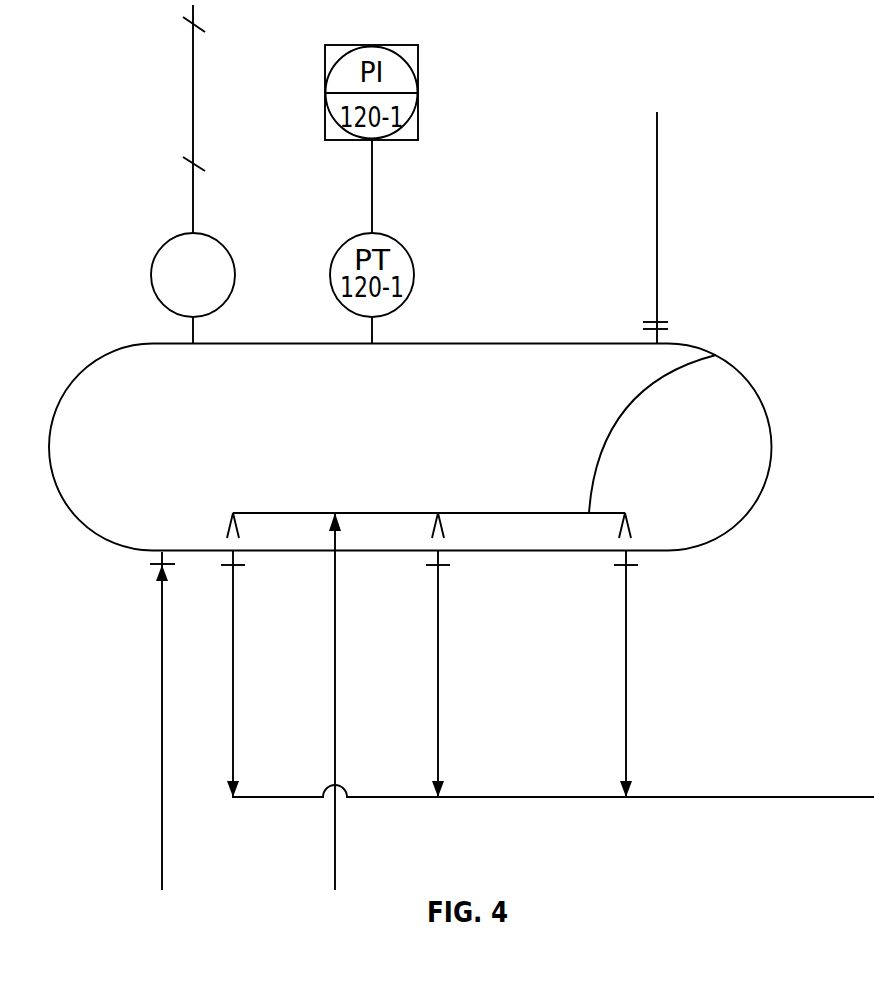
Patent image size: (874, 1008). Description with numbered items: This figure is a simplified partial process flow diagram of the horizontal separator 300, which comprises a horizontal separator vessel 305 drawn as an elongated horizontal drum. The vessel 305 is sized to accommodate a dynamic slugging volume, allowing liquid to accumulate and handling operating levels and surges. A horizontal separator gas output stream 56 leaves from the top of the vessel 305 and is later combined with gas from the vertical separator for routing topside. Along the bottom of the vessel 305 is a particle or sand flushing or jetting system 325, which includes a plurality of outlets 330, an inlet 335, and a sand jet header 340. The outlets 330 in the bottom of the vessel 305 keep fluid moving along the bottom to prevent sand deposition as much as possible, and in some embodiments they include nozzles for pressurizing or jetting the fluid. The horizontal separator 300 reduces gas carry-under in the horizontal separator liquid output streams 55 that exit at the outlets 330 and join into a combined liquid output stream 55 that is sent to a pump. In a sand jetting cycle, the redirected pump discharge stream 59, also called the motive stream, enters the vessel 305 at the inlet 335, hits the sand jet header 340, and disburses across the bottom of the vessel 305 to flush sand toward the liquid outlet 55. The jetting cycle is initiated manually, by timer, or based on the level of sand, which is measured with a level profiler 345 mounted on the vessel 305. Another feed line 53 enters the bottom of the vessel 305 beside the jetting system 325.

The horizontal separator 300 is at (694, 57).
The horizontal separator vessel 305 is at (161, 345).
The level profiler 345 is at (159, 251).
The horizontal separator gas output stream 56 is at (657, 131).
The sand jet header 340 is at (712, 357).
The inlet 335 is at (340, 552).
The sand flushing or jetting system 325 is at (152, 555).
The outlets 330 is at (236, 552).
The horizontal separator liquid output stream 55 is at (233, 623).
The feed line 53 is at (162, 828).
The redirected pump discharge stream 59 is at (335, 828).